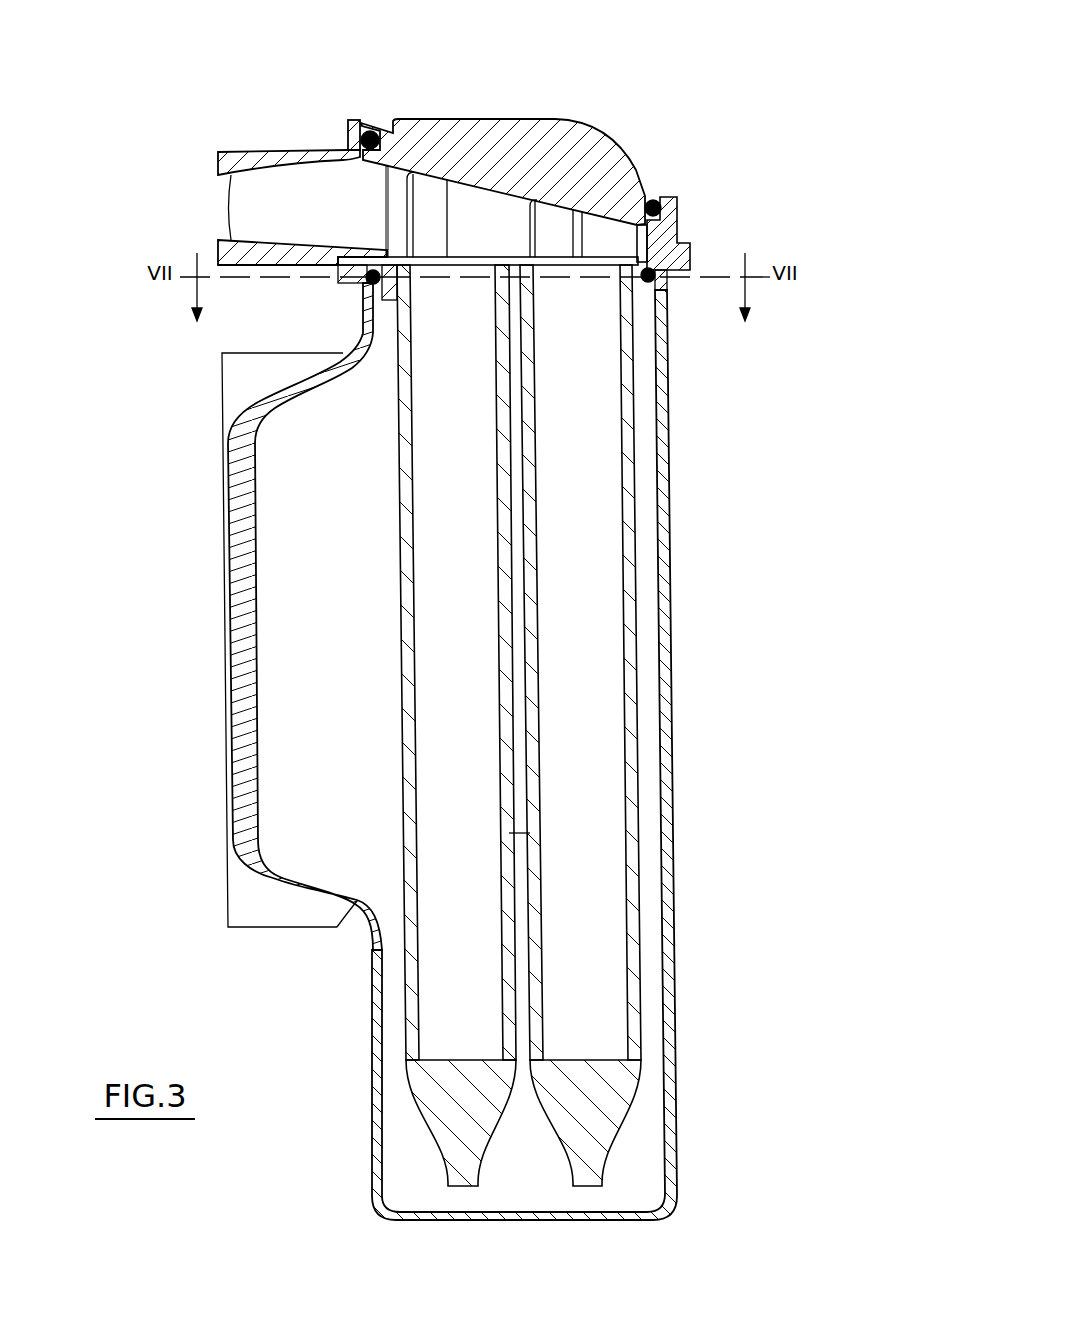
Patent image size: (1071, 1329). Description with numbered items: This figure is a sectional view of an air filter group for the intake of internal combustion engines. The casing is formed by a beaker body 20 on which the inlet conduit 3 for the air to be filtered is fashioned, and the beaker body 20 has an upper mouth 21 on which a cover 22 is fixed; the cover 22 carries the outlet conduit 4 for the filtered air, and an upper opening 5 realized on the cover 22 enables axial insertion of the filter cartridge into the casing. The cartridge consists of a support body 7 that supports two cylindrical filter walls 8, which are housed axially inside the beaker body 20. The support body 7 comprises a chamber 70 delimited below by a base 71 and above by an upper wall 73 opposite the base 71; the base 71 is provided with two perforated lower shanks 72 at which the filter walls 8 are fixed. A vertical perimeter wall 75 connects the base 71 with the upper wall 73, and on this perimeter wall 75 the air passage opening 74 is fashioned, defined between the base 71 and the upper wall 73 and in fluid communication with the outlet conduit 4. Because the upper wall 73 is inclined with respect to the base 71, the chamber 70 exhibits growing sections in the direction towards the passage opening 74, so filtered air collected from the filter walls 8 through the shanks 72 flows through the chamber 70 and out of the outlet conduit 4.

The inlet conduit 3 is at (290, 657).
The outlet conduit 4 is at (217, 163).
The upper opening 5 is at (368, 129).
The support body 7 is at (578, 115).
The filter wall 8 is at (449, 613).
The beaker body 20 is at (672, 863).
The upper mouth 21 is at (660, 288).
The cover 22 is at (348, 138).
The chamber 70 is at (496, 246).
The base 71 is at (503, 262).
The perforated lower shank 72 is at (400, 275).
The upper wall 73 is at (463, 192).
The air passage opening 74 is at (383, 212).
The vertical perimeter wall 75 is at (633, 233).